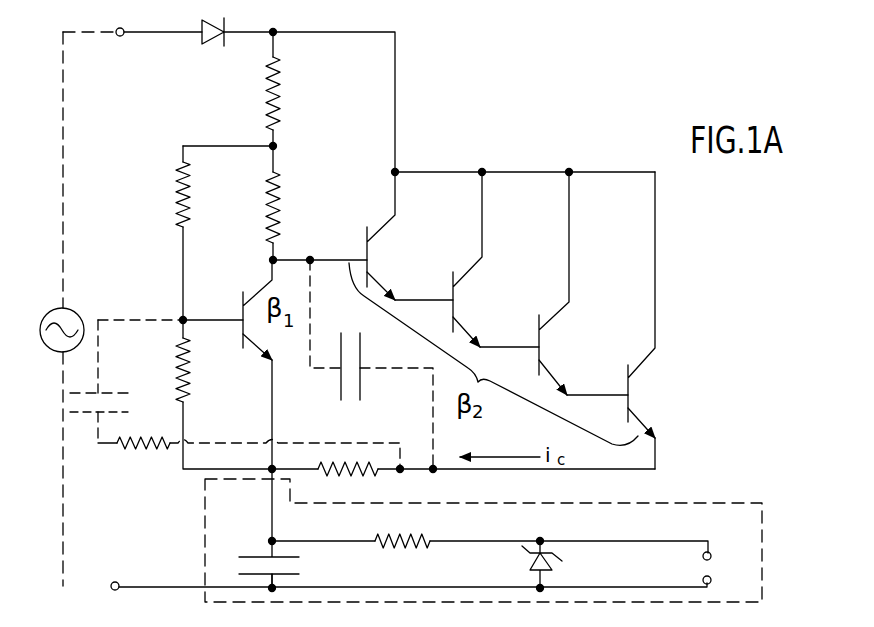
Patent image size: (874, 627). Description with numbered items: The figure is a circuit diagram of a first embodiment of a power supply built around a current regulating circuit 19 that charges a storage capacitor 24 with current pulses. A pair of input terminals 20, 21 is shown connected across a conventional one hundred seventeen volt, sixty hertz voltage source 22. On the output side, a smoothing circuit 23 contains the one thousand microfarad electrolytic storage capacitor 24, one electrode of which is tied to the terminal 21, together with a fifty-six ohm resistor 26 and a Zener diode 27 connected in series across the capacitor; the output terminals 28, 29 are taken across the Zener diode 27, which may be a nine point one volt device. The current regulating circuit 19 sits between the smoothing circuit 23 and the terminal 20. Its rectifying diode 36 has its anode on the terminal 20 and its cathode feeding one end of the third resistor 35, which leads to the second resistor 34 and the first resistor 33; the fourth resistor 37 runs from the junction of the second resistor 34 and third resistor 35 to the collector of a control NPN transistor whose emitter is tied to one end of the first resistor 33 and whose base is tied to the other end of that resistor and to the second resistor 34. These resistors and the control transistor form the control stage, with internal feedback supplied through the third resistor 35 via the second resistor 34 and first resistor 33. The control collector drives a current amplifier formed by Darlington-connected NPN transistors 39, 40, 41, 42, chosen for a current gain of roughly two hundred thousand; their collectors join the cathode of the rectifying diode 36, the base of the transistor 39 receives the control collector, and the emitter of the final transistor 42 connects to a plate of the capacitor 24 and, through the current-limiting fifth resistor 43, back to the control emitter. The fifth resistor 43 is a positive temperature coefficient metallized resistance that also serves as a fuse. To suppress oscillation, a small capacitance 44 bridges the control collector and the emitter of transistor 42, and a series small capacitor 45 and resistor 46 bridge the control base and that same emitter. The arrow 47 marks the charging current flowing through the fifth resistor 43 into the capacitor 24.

The current regulating circuit 19 is at (520, 108).
The terminal 20 is at (122, 36).
The terminal 21 is at (117, 581).
The voltage source 22 is at (70, 311).
The smoothing circuit 23 is at (672, 503).
The storage capacitor 24 is at (287, 566).
The resistor 26 is at (404, 554).
The Zener diode 27 is at (553, 570).
The output terminal 28 is at (710, 552).
The output terminal 29 is at (711, 581).
The first resistor 33 is at (190, 392).
The second resistor 34 is at (187, 229).
The third resistor 35 is at (281, 100).
The rectifying diode 36 is at (202, 42).
The fourth resistor 37 is at (281, 210).
The transistor 39 is at (383, 260).
The transistor 40 is at (468, 303).
The transistor 41 is at (552, 350).
The transistor 42 is at (643, 400).
The current-limiting fifth resistor 43 is at (350, 463).
The capacitance 44 is at (362, 375).
The capacitor 45 is at (101, 391).
The resistor 46 is at (138, 452).
The arrow 47 is at (520, 456).